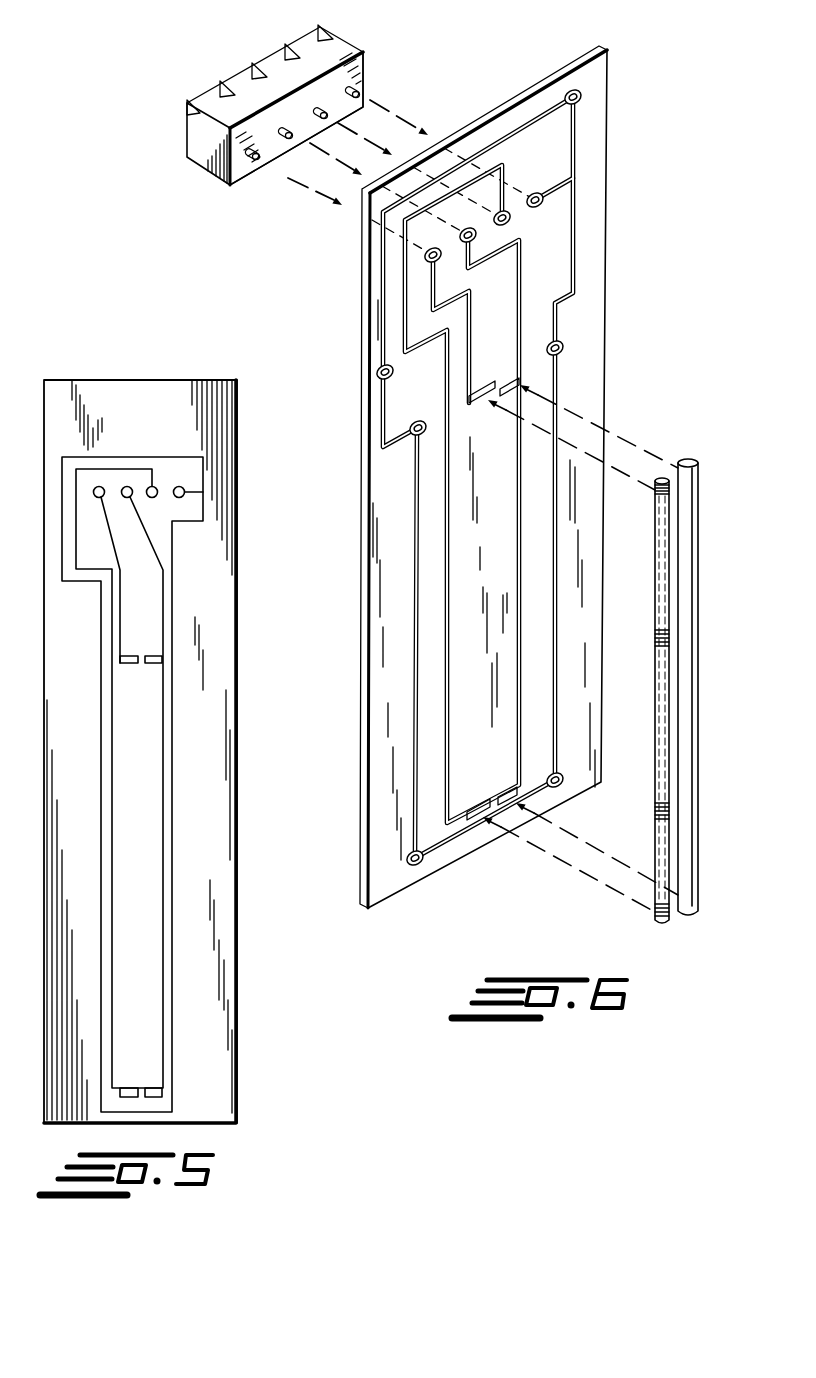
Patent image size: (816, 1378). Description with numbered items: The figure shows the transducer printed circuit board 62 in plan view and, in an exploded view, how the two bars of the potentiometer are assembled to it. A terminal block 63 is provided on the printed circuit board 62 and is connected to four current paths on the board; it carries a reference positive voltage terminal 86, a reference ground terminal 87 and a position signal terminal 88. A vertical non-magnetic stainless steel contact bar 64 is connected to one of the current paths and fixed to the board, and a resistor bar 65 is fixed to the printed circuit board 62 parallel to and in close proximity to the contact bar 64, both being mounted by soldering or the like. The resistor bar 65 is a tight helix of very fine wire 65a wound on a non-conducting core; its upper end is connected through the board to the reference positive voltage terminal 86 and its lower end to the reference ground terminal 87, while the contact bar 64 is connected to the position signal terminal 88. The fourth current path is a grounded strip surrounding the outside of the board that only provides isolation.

In FIG. 6, the printed circuit board 62 is at (610, 222).
In FIG. 5, the printed circuit board 62 is at (244, 709).
In FIG. 6, the terminal block 63 is at (354, 38).
In FIG. 6, the contact bar 64 is at (698, 566).
In FIG. 6, the resistor bar 65 is at (655, 576).
In FIG. 6, the fine wire 65a is at (656, 493).
In FIG. 6, the reference positive voltage terminal 86 is at (248, 161).
In FIG. 6, the reference ground terminal 87 is at (356, 74).
In FIG. 6, the position signal terminal 88 is at (283, 141).